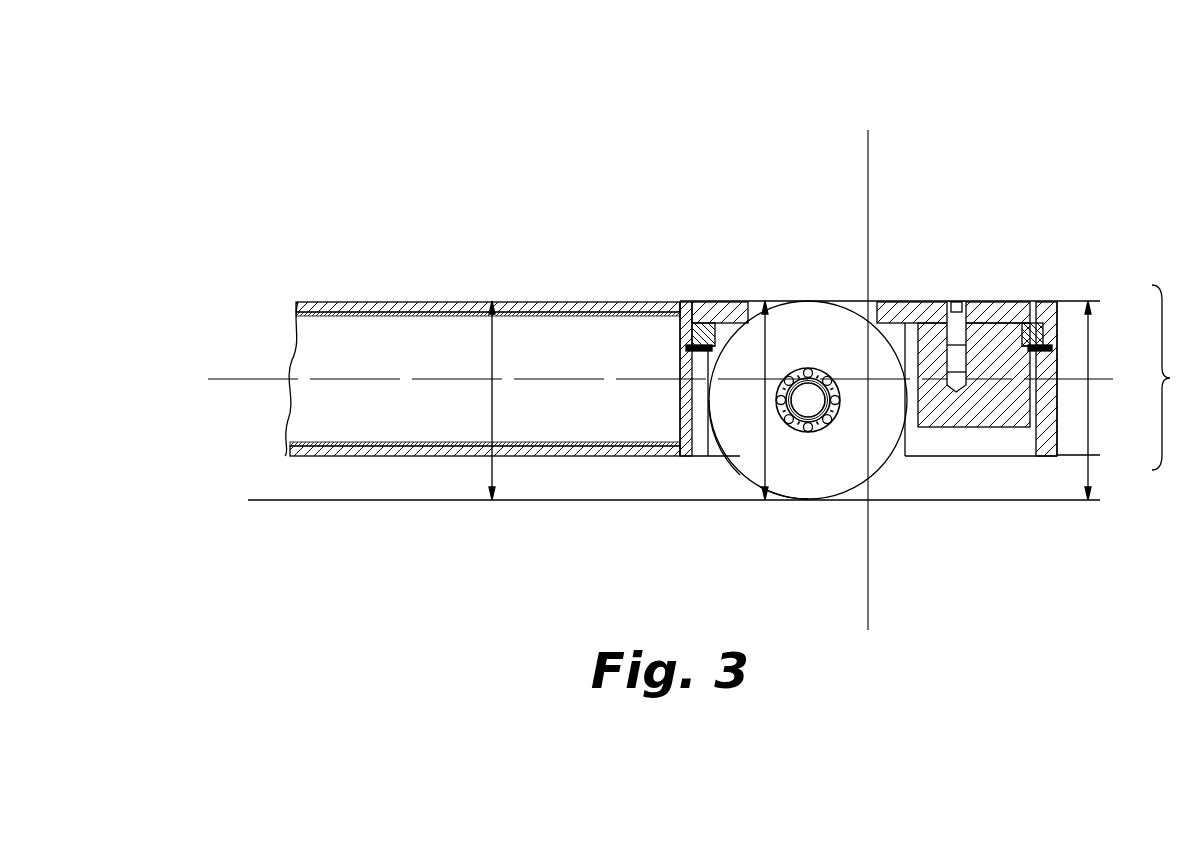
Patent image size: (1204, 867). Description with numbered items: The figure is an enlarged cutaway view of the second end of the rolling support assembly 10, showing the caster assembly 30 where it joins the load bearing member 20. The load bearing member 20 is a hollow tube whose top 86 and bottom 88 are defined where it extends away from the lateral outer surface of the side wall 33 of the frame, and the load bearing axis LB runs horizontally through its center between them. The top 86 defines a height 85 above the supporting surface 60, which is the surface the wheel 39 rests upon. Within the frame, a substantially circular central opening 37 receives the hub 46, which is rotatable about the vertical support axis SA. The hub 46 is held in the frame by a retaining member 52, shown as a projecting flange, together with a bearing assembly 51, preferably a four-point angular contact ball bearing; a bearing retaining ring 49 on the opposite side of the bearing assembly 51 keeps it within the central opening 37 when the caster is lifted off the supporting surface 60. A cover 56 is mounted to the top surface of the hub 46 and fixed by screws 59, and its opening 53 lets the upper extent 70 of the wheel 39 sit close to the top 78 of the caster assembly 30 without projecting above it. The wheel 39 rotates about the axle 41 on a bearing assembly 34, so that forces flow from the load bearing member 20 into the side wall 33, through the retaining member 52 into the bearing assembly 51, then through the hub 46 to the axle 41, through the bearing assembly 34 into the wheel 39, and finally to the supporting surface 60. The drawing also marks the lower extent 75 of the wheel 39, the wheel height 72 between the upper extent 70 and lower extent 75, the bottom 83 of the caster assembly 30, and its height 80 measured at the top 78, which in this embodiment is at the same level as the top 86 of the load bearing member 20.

The rolling support assembly 10 is at (508, 168).
The load bearing member 20 is at (418, 300).
The caster assembly 30 is at (1178, 377).
The side wall 33 is at (680, 395).
The bearing assembly 34 is at (822, 428).
The central opening 37 is at (957, 445).
The wheel 39 is at (740, 455).
The axle 41 is at (812, 404).
The hub 46 is at (1002, 300).
The bearing retaining ring 49 is at (700, 349).
The bearing assembly 51 is at (705, 335).
The retaining member 52 is at (695, 300).
The opening 53 is at (851, 300).
The cover 56 is at (717, 300).
The screws 59 is at (942, 300).
The supporting surface 60 is at (330, 502).
The upper extent 70 is at (773, 300).
The height 72 is at (765, 455).
The lower extent 75 is at (778, 500).
The top 78 is at (684, 300).
The height 80 is at (1088, 422).
The bottom 83 is at (678, 458).
The height 85 is at (492, 395).
The top 86 is at (510, 300).
The bottom 88 is at (450, 457).
The load bearing axis LB is at (224, 380).
The support axis SA is at (868, 160).